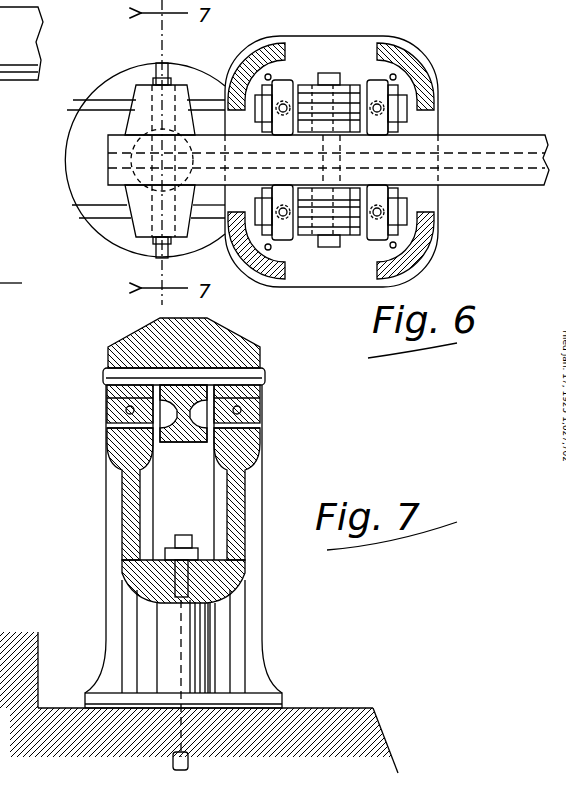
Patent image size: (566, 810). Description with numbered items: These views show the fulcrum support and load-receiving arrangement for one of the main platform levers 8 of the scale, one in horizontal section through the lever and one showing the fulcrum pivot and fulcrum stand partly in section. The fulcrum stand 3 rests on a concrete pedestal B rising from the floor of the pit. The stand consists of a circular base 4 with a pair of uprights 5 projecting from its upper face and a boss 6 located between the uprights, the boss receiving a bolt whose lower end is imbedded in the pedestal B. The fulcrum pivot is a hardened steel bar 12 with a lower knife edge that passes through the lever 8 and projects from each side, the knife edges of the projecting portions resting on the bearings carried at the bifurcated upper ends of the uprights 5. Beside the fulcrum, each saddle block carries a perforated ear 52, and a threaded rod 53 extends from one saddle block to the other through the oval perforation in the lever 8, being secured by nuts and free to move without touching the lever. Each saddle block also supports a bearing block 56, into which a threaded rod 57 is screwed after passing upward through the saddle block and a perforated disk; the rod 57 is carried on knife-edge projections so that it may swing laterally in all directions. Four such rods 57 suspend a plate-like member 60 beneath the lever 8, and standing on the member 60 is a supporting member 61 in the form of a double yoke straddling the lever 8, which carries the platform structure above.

In FIG. 6, the fulcrum stand 3 is at (77, 190).
In FIG. 6, the main platform lever 8 is at (115, 153).
In FIG. 6, the hardened steel bar 12 is at (157, 240).
In FIG. 7, the hardened steel bar 12 is at (265, 380).
In FIG. 6, the plate-like member 60 is at (307, 53).
In FIG. 6, the supporting member 61 is at (423, 63).
In FIG. 6, the perforated ear 52 is at (330, 103).
In FIG. 6, the threaded rod 53 is at (328, 247).
In FIG. 6, the bearing block 56 is at (382, 231).
In FIG. 6, the threaded rod 57 is at (378, 213).
In FIG. 7, the circular base 4 is at (283, 698).
In FIG. 7, the upright 5 is at (250, 521).
In FIG. 7, the boss 6 is at (233, 617).
In FIG. 7, the concrete pedestal B is at (353, 720).